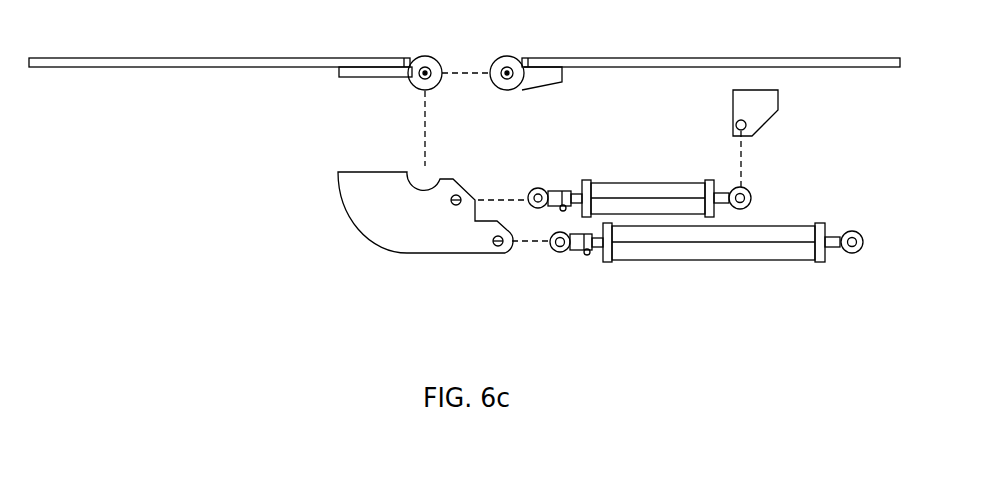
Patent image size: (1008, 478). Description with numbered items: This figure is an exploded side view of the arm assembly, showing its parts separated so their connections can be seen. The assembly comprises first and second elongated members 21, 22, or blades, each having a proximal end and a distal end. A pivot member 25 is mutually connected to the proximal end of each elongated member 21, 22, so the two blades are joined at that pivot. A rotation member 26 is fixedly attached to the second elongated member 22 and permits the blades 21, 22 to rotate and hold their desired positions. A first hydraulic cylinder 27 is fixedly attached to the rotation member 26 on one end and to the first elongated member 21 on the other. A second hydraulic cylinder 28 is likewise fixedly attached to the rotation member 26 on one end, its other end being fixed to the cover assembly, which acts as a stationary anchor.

The first elongated member 21 is at (708, 60).
The second elongated member 22 is at (160, 60).
The pivot member 25 is at (412, 84).
The rotation member 26 is at (388, 218).
The first hydraulic cylinder 27 is at (643, 195).
The second hydraulic cylinder 28 is at (695, 250).